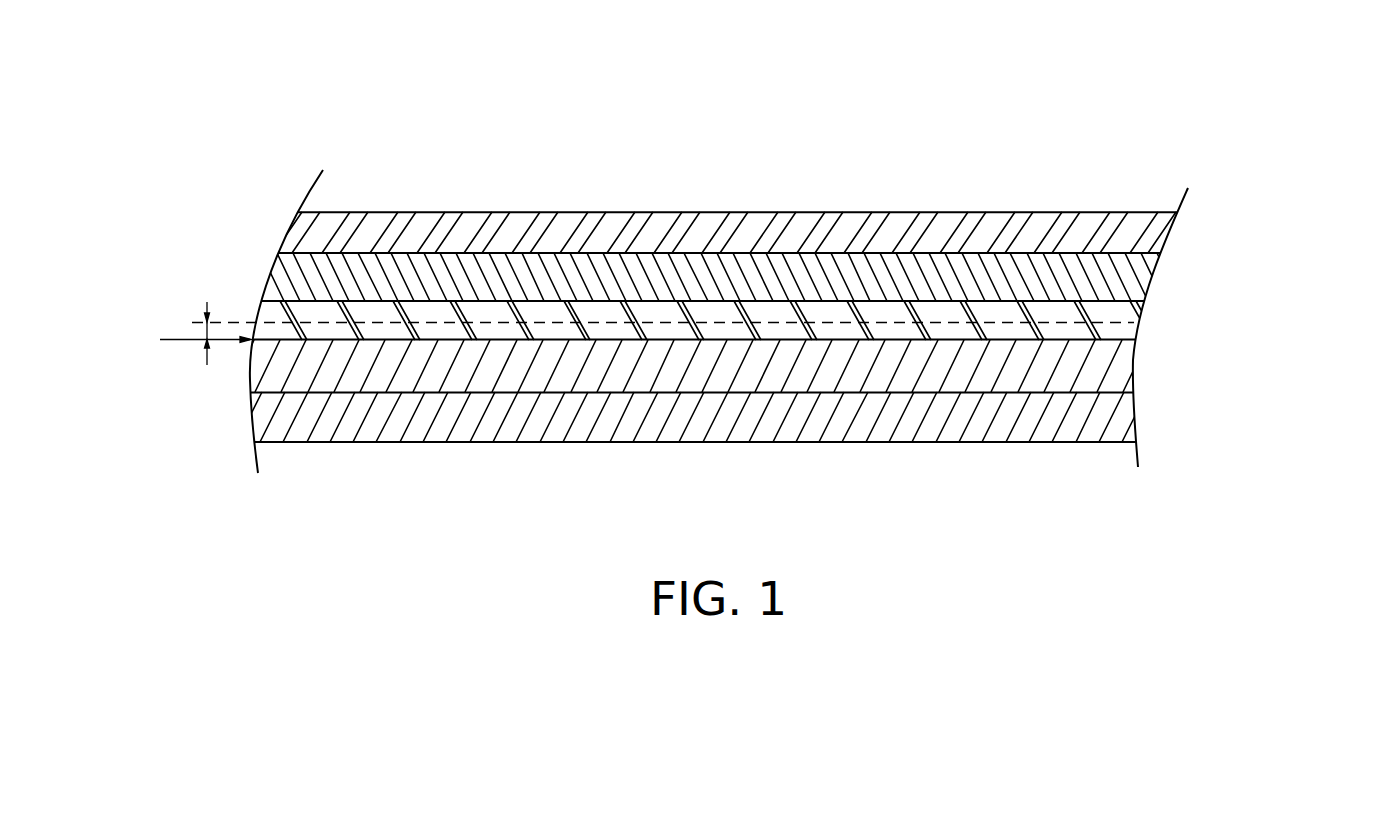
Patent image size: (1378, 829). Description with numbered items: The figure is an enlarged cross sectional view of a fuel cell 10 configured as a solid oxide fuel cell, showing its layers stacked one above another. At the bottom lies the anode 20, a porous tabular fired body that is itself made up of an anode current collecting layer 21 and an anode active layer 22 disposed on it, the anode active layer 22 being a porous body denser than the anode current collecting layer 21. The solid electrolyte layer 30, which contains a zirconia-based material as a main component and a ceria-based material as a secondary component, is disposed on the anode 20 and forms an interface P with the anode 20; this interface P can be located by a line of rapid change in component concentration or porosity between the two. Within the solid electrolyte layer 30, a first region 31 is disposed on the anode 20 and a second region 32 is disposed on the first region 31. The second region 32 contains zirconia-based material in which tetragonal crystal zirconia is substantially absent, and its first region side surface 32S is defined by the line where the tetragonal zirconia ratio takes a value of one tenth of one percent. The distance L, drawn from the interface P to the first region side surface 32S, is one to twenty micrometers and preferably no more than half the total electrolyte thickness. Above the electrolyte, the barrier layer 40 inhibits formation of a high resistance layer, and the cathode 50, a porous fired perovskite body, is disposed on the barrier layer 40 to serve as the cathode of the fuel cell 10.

The fuel cell 10 is at (300, 107).
The anode 20 is at (1278, 383).
The anode current collecting layer 21 is at (1123, 418).
The anode active layer 22 is at (1128, 380).
The solid electrolyte layer 30 is at (1278, 298).
The first region 31 is at (1120, 332).
The second region 32 is at (1118, 312).
The first region side surface 32S is at (883, 314).
The barrier layer 40 is at (1123, 283).
The cathode 50 is at (1162, 238).
The distance L is at (205, 337).
The interface P is at (191, 339).